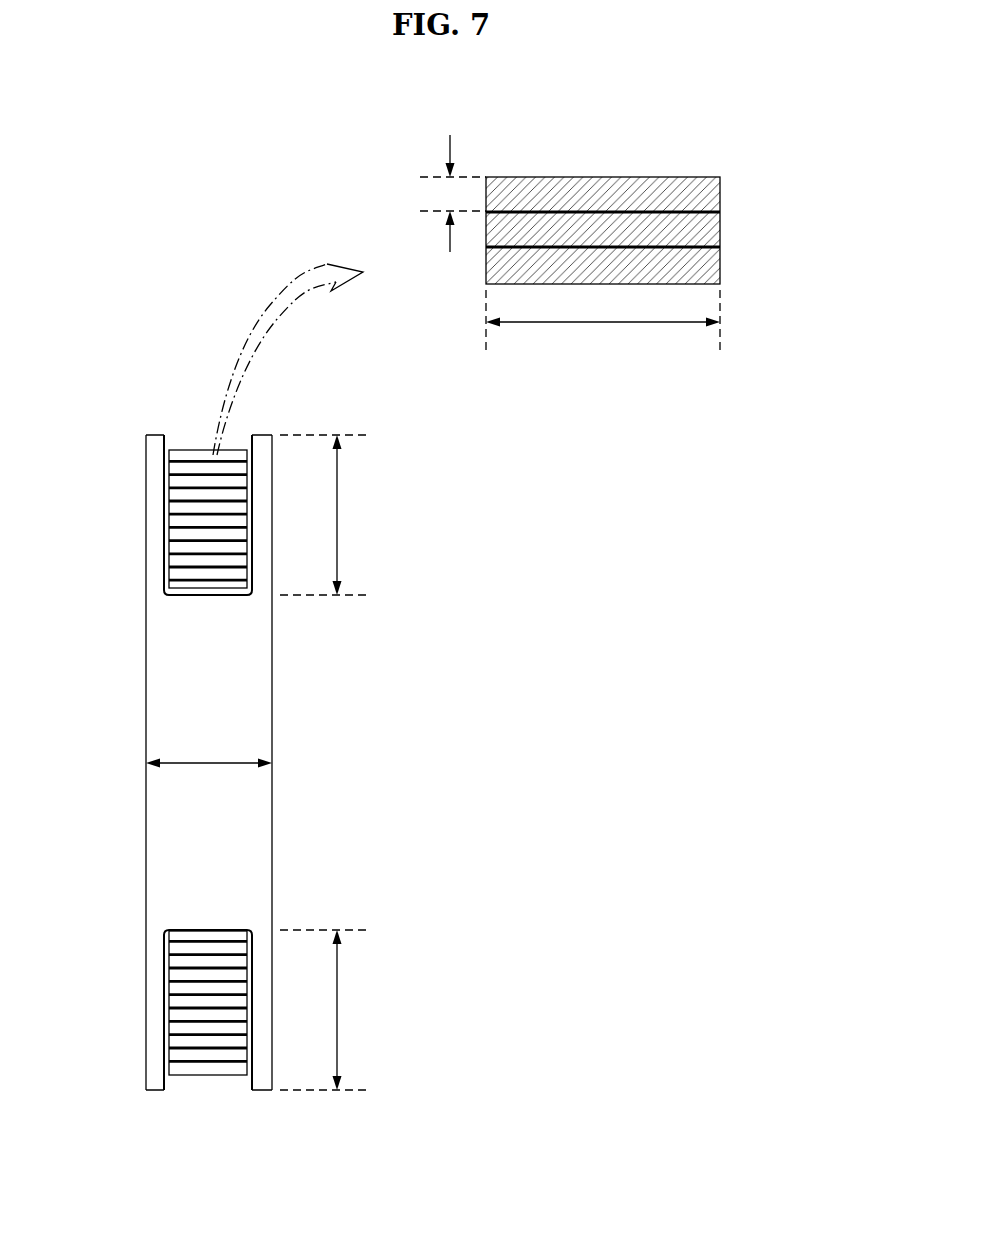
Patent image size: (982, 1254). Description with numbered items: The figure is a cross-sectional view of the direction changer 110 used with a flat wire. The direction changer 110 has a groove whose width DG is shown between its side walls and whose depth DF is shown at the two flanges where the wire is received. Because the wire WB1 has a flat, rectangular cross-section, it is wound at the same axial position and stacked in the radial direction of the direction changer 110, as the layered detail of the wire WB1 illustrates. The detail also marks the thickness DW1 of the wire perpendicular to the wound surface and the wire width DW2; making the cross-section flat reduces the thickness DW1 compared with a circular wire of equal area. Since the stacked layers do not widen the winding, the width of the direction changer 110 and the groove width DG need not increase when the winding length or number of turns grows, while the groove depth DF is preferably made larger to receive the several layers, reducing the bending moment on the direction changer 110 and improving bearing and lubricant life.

The direction changer 110 is at (153, 670).
The wire WB1 is at (712, 268).
The thickness of the wire DW1 is at (427, 193).
The width of the wire DW2 is at (603, 321).
The depth of the groove DF is at (330, 762).
The width of the groove DG is at (209, 749).